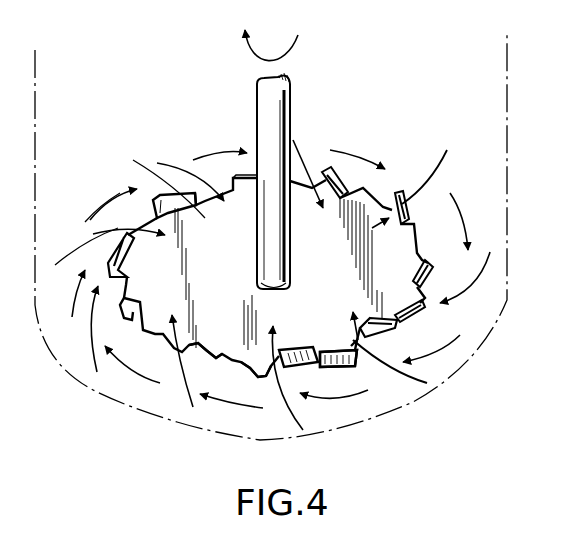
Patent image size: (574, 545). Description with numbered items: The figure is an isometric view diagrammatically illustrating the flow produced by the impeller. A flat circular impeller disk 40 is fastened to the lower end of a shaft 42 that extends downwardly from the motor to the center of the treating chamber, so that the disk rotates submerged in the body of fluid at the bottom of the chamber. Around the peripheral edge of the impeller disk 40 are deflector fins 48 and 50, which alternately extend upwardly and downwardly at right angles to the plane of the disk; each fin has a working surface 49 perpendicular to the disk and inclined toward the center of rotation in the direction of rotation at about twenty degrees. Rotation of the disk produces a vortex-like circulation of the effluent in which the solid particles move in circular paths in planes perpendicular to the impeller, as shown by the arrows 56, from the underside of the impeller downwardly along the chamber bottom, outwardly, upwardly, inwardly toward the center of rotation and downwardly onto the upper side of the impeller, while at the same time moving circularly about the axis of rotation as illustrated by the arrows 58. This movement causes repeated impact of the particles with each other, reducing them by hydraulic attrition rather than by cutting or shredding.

The impeller disk 40 is at (162, 192).
The shaft 42 is at (259, 103).
The deflector fin 48 is at (200, 345).
The working surface 49 is at (343, 368).
The deflector fin 50 is at (246, 368).
The arrows 56 is at (177, 395).
The arrows 58 is at (130, 372).